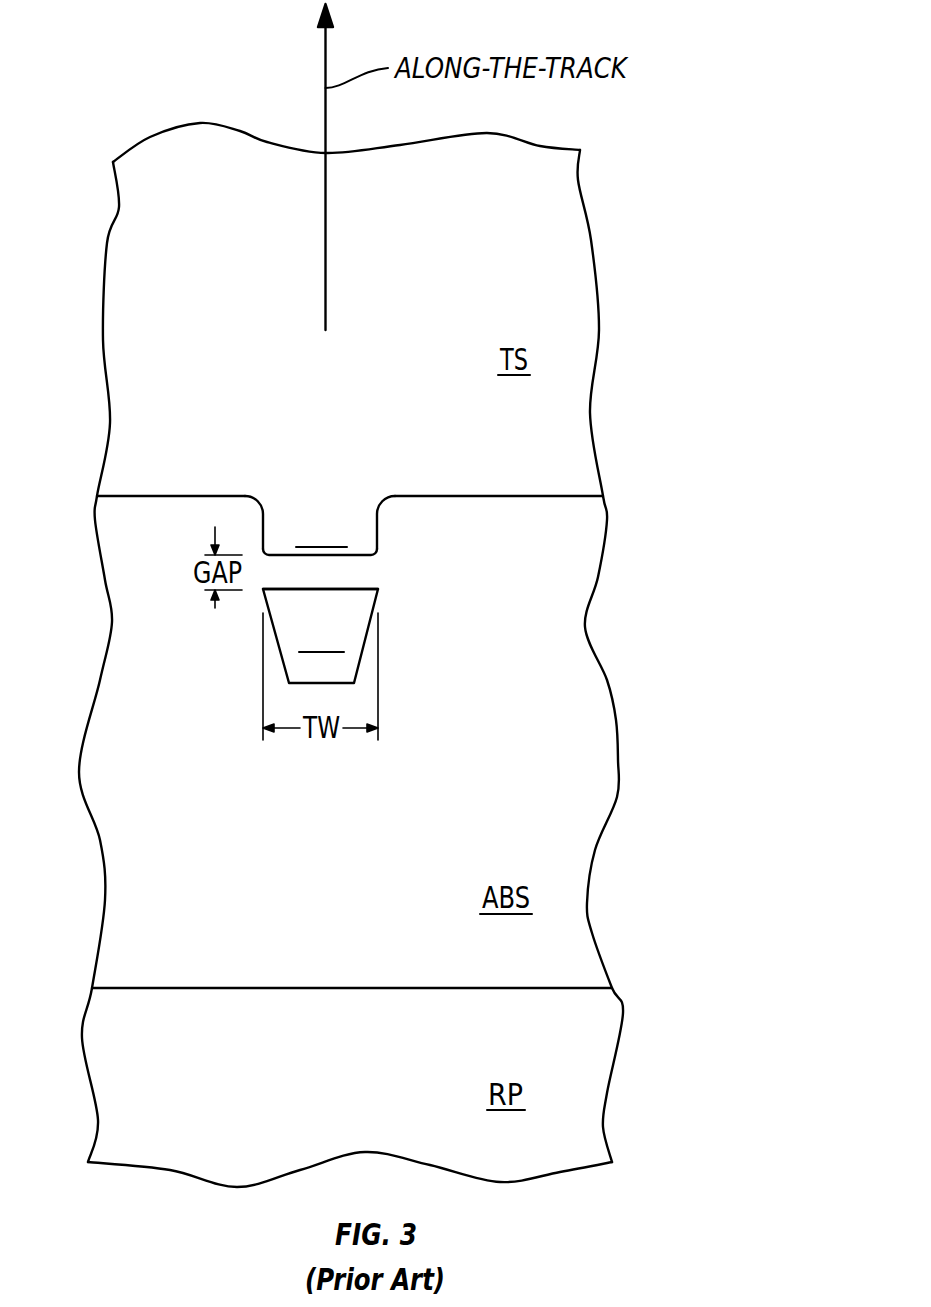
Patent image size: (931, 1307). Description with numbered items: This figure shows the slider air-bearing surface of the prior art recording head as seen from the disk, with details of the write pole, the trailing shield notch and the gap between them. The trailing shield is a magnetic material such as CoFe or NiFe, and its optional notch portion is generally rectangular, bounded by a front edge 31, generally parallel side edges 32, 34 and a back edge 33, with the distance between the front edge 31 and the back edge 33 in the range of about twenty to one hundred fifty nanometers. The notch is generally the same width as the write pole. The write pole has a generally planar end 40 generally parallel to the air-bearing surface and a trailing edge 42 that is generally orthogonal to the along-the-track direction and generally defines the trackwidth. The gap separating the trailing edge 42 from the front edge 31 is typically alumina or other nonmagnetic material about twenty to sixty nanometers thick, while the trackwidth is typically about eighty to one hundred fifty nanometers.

The front edge 31 is at (275, 550).
The side edge 32 is at (266, 518).
The back edge 33 is at (525, 494).
The side edge 34 is at (373, 520).
The planar end 40 is at (345, 665).
The trailing edge 42 is at (325, 587).